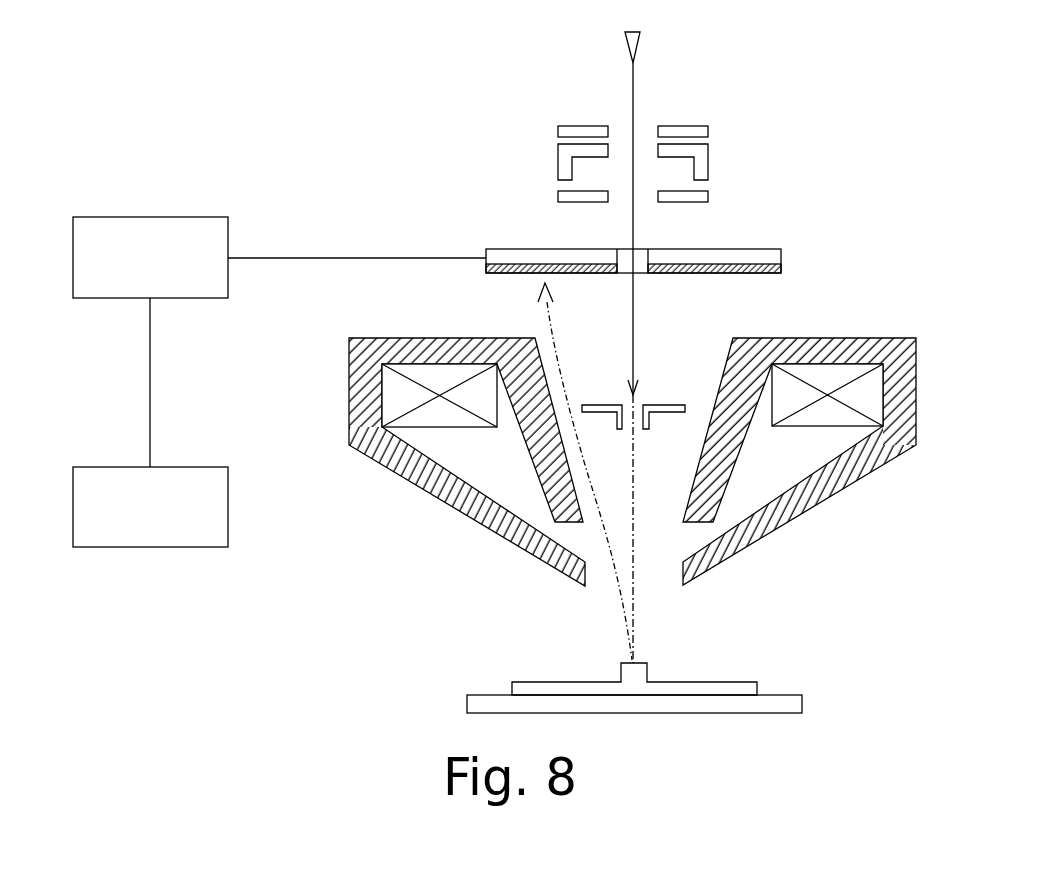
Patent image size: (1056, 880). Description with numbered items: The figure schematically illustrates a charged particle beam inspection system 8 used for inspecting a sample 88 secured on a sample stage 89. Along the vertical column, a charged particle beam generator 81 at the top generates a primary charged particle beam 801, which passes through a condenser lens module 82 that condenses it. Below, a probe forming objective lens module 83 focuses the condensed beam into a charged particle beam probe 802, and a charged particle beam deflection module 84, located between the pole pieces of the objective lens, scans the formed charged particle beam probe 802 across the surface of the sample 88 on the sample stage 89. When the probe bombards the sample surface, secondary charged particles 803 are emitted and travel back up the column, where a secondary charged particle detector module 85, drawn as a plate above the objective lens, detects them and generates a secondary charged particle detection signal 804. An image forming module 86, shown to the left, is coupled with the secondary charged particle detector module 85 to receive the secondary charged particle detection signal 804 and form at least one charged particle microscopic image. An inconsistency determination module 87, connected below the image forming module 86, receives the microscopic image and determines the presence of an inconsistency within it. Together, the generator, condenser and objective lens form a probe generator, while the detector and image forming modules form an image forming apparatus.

The charged particle beam inspection system 8 is at (128, 104).
The charged particle beam generator 81 is at (731, 32).
The condenser lens module 82 is at (707, 172).
The primary charged particle beam 801 is at (635, 230).
The secondary charged particle detector module 85 is at (781, 252).
The secondary charged particle detection signal 804 is at (282, 242).
The image forming module 86 is at (163, 269).
The inconsistency determination module 87 is at (163, 517).
The secondary charged particles 803 is at (543, 320).
The probe forming objective lens module 83 is at (916, 375).
The charged particle beam deflection module 84 is at (675, 402).
The charged particle beam probe 802 is at (637, 587).
The sample 88 is at (757, 687).
The sample stage 89 is at (802, 703).